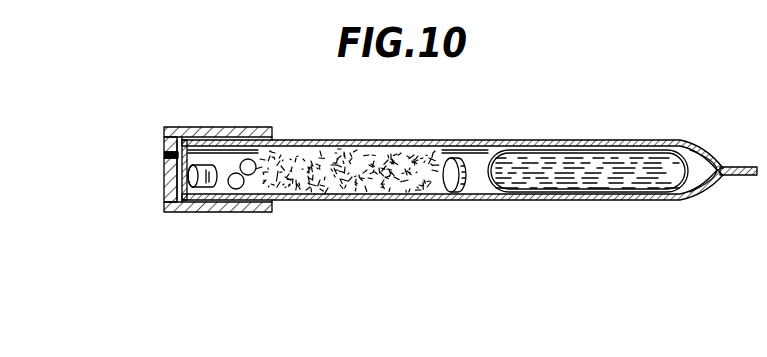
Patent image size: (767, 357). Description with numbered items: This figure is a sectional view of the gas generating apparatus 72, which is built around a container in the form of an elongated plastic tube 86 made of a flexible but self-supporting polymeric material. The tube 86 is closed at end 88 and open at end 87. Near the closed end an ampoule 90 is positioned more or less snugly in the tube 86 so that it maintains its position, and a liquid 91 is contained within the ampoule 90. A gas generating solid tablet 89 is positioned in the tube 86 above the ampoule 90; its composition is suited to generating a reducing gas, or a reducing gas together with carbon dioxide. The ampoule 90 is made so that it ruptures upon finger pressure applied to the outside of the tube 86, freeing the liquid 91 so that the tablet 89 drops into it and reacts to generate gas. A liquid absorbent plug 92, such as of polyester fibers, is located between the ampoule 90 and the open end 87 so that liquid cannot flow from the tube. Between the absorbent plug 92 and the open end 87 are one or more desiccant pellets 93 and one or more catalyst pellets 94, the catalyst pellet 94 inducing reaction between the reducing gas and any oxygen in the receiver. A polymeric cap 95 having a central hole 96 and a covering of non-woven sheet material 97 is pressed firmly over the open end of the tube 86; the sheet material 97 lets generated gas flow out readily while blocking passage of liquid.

The gas generating apparatus 72 is at (378, 134).
The elongated plastic tube 86 is at (474, 140).
The open end 87 is at (178, 153).
The closed end 88 is at (742, 165).
The gas generating solid tablet 89 is at (453, 193).
The ampoule 90 is at (698, 182).
The liquid 91 is at (586, 163).
The liquid absorbent plug 92 is at (375, 178).
The desiccant pellet 93 is at (253, 176).
The catalyst pellet 94 is at (211, 188).
The polymeric cap 95 is at (207, 140).
The central hole 96 is at (176, 180).
The non-woven sheet material 97 is at (192, 202).